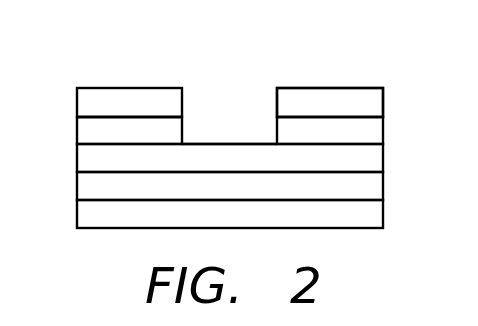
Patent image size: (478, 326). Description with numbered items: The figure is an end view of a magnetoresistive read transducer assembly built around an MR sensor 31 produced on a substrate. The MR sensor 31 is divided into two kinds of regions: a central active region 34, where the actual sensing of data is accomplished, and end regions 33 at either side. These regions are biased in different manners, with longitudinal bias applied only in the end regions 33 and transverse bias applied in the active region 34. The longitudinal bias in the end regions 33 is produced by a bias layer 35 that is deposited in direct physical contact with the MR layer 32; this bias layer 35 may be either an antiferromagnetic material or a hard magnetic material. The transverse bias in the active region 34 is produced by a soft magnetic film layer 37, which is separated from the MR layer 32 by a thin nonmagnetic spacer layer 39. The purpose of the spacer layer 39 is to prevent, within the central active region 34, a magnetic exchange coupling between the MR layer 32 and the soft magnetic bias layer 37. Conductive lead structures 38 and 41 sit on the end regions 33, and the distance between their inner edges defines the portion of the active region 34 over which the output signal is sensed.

The magnetoresistive sensor 31 is at (249, 108).
The MR layer 32 is at (383, 160).
The end regions 33 is at (113, 50).
The central active region 34 is at (195, 108).
The bias layer 35 is at (383, 132).
The soft magnetic film layer 37 is at (383, 218).
The conductive lead structure 38 is at (77, 103).
The nonmagnetic spacer layer 39 is at (383, 190).
The conductive lead structure 41 is at (383, 105).